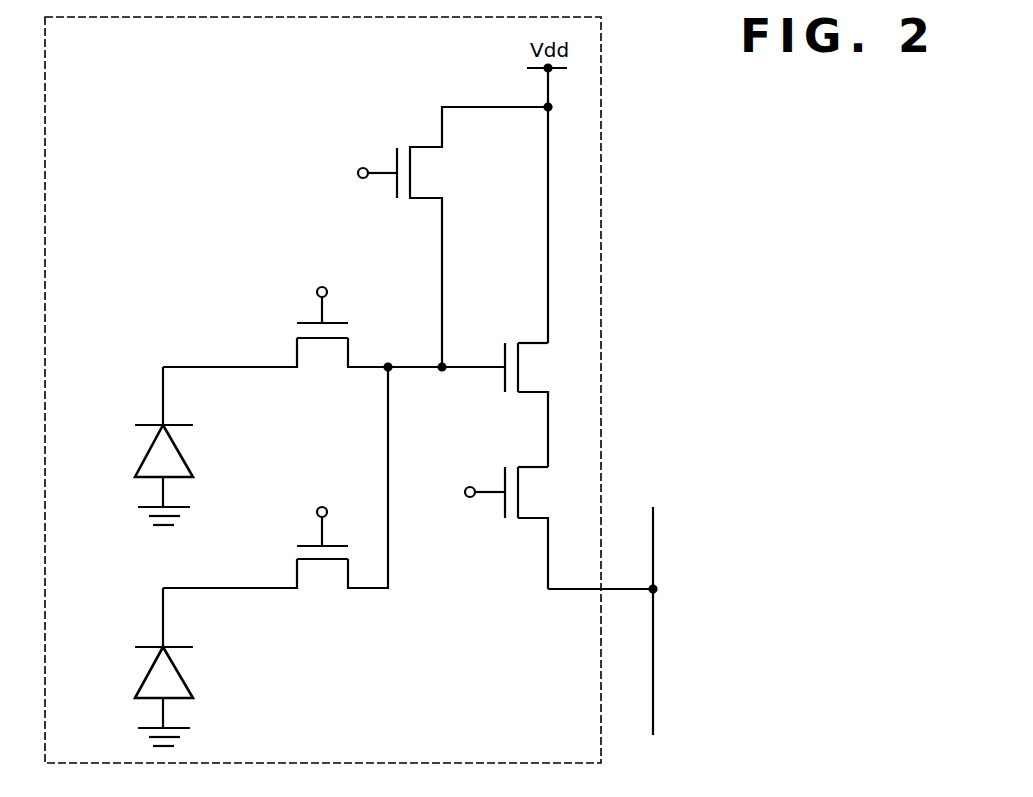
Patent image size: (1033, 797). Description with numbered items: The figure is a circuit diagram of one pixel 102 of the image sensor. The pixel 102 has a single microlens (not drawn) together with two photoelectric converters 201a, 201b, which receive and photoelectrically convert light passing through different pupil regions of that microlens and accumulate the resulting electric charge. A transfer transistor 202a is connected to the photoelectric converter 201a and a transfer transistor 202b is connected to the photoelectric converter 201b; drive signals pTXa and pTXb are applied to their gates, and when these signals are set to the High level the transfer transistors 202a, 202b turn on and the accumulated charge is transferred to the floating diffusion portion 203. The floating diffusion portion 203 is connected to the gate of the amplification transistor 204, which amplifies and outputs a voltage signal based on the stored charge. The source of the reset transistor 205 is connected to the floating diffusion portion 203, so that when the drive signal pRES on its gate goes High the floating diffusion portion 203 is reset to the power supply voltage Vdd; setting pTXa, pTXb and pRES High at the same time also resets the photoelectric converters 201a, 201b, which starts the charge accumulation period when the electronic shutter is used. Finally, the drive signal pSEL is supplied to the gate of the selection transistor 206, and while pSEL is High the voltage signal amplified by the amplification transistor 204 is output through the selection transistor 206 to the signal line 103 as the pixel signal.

The pixel 102 is at (603, 38).
The signal line 103 is at (654, 688).
The photoelectric converter 201a is at (147, 447).
The photoelectric converter 201b is at (149, 672).
The transfer transistor 202a is at (295, 357).
The transfer transistor 202b is at (295, 578).
The floating diffusion portion 203 is at (442, 371).
The amplification transistor 204 is at (535, 342).
The reset transistor 205 is at (425, 146).
The selection transistor 206 is at (535, 467).